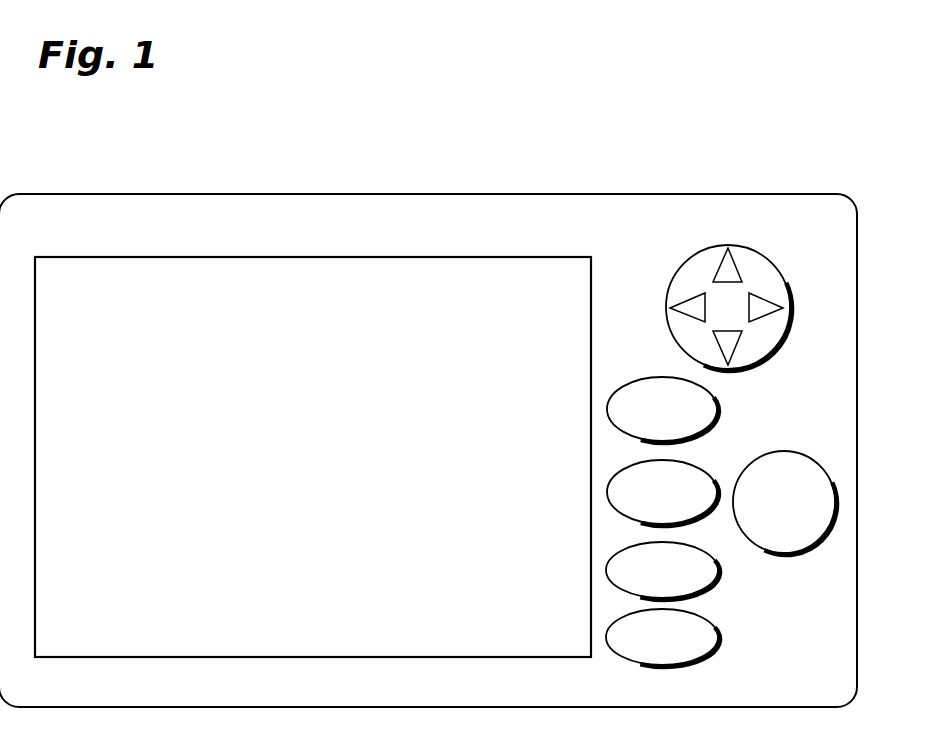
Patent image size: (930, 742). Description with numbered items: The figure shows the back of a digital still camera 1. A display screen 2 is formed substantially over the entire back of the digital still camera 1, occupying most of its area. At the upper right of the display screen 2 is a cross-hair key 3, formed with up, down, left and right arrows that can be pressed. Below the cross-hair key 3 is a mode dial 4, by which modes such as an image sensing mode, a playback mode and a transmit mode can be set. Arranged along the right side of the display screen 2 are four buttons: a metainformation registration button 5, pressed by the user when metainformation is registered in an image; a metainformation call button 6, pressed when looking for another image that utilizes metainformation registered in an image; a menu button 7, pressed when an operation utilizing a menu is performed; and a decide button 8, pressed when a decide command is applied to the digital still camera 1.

The digital still camera 1 is at (422, 166).
The display screen 2 is at (485, 257).
The cross-hair key 3 is at (773, 267).
The mode dial 4 is at (816, 461).
The metainformation registration button 5 is at (607, 409).
The metainformation call button 6 is at (607, 492).
The menu button 7 is at (606, 570).
The decide button 8 is at (606, 637).